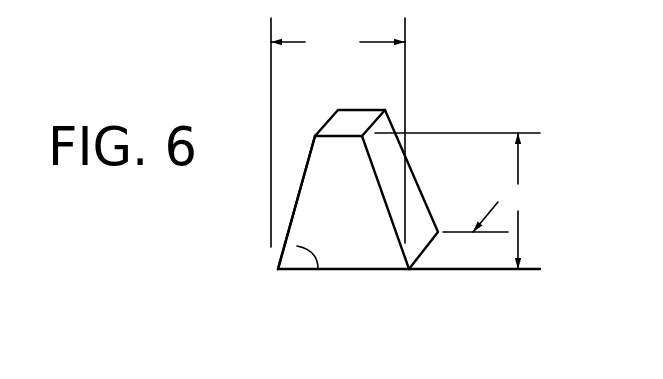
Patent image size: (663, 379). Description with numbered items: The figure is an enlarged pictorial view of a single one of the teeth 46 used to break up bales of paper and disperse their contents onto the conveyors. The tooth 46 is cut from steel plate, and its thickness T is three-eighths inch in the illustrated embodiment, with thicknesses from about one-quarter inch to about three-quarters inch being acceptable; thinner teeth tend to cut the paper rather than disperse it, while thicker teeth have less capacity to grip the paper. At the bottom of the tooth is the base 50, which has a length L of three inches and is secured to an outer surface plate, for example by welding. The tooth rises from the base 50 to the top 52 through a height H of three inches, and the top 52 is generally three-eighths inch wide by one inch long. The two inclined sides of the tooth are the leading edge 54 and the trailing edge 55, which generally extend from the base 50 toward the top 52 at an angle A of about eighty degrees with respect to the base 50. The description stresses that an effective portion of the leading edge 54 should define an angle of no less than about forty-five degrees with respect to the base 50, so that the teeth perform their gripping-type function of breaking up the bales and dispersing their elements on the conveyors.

The tooth 46 is at (344, 183).
The base 50 is at (350, 270).
The top 52 is at (353, 122).
The leading edge 54 is at (294, 235).
The trailing edge 55 is at (423, 195).
The angle A is at (297, 247).
The length L is at (338, 132).
The height H is at (457, 201).
The thickness T is at (440, 269).